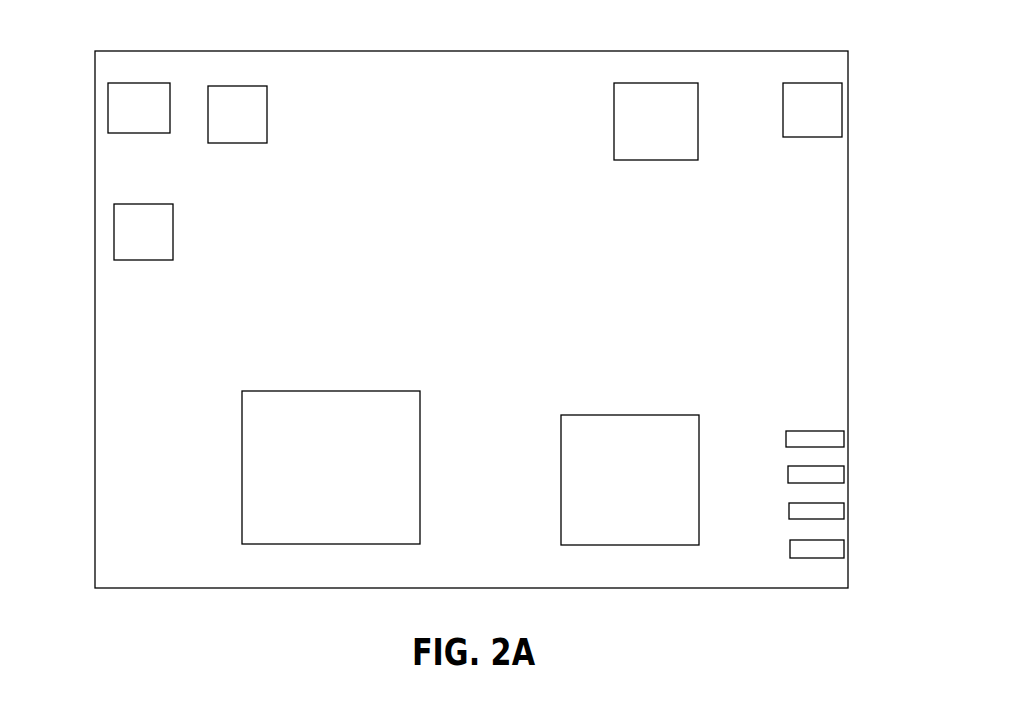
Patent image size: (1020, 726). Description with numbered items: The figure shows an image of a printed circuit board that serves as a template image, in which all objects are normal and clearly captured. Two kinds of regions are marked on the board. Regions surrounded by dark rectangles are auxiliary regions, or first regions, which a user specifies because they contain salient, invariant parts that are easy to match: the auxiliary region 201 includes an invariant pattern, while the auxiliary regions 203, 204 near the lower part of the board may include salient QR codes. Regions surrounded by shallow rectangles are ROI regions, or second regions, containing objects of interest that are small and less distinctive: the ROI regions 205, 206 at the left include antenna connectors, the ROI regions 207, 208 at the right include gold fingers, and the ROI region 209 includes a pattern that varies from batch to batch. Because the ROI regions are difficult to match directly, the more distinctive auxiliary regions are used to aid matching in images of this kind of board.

The auxiliary region 201 is at (234, 86).
The auxiliary region 203 is at (316, 544).
The auxiliary region 204 is at (626, 545).
The ROI region 205 is at (108, 110).
The ROI region 206 is at (114, 231).
The ROI region 207 is at (842, 108).
The ROI region 208 is at (840, 474).
The ROI region 209 is at (652, 83).